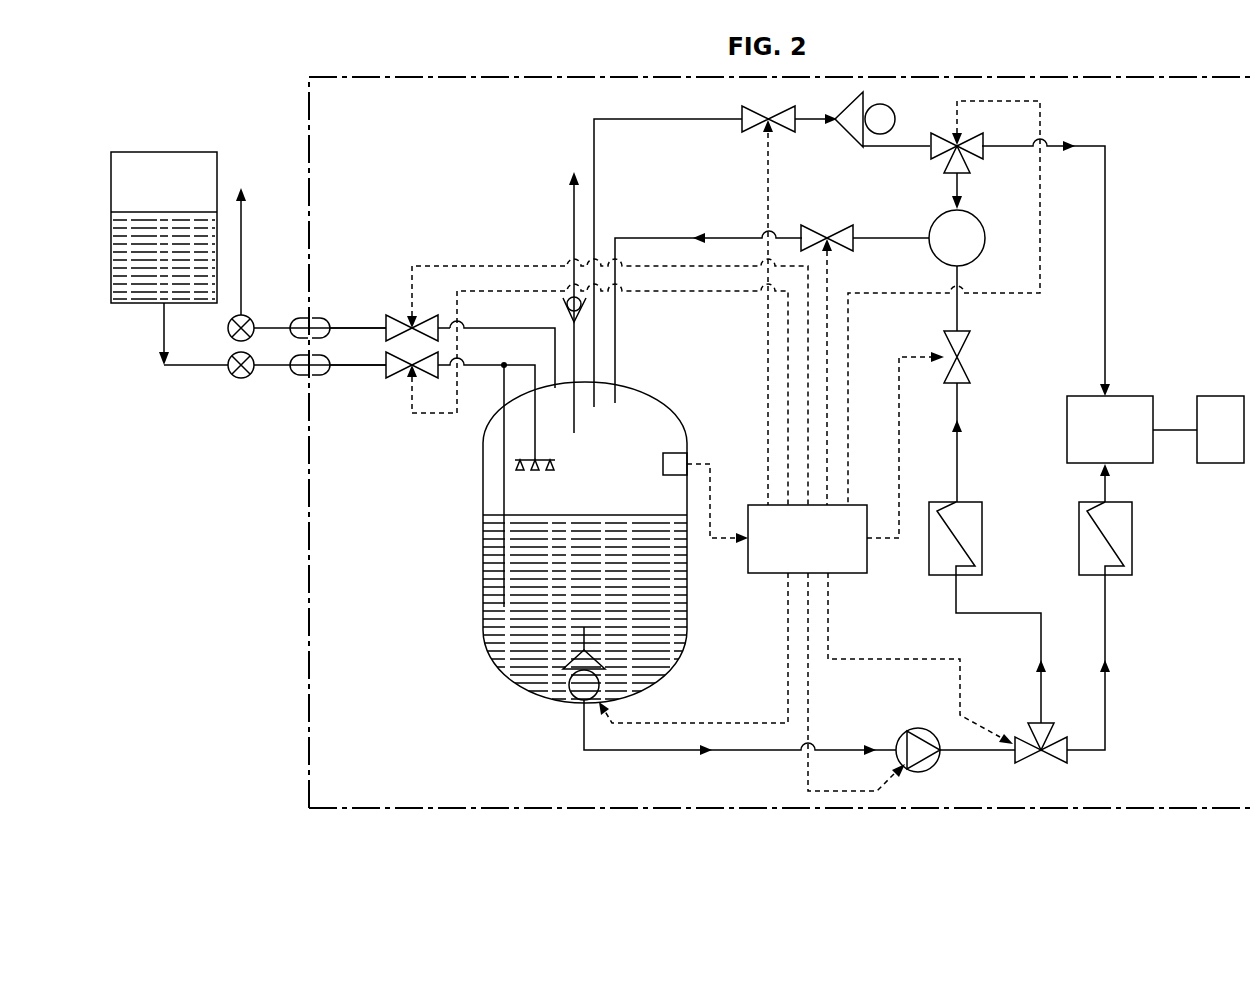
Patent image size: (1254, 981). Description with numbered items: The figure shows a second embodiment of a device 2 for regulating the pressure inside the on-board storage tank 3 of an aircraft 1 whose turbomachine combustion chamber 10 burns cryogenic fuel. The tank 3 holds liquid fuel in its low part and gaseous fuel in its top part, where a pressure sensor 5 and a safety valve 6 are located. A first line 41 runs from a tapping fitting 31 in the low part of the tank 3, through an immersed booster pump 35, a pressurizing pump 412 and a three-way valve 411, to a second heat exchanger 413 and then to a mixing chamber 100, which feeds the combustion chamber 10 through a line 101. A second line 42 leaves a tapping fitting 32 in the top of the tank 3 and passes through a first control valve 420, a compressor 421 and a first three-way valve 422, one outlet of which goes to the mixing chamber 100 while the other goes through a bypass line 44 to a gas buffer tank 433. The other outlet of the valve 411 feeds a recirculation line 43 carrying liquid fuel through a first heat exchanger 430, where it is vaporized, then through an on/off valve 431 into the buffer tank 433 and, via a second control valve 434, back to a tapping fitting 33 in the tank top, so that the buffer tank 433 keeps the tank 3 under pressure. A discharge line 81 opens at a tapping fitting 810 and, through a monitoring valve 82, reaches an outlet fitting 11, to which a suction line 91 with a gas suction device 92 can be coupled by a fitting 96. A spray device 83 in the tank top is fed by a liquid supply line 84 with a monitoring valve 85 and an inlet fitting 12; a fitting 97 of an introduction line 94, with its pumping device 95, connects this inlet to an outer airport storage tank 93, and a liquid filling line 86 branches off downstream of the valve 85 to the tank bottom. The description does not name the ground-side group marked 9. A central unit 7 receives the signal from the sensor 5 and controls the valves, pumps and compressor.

The aircraft 1 is at (309, 497).
The pressure regulating device 2 is at (466, 689).
The on-board storage tank 3 is at (483, 566).
The pressure sensor 5 is at (683, 458).
The safety valve 6 is at (562, 311).
The central unit 7 is at (807, 539).
The gas supply unit 9 is at (146, 425).
The combustion chamber 10 is at (1220, 429).
The outlet fitting 11 is at (321, 320).
The inlet fitting 12 is at (321, 376).
The tapping fitting 31 is at (582, 708).
The tapping fitting 32 is at (603, 382).
The tapping fitting 33 is at (618, 385).
The booster pump 35 is at (568, 692).
The first line 41 is at (729, 756).
The second line 42 is at (810, 122).
The recirculation line 43 is at (1041, 646).
The bypass line 44 is at (956, 194).
The discharge line 81 is at (365, 324).
The monitoring valve 82 is at (397, 318).
The spray device 83 is at (540, 458).
The liquid supply line 84 is at (365, 371).
The monitoring valve 85 is at (397, 380).
The liquid filling line 86 is at (506, 486).
The suction line 91 is at (272, 322).
The gas suction device 92 is at (228, 331).
The outer cryogenic fuel storage tank 93 is at (166, 152).
The introduction line 94 is at (186, 370).
The pumping device 95 is at (240, 380).
The fitting 96 is at (299, 320).
The fitting 97 is at (299, 376).
The mixing chamber 100 is at (1110, 449).
The line 101 is at (1172, 424).
The three-way valve 411 is at (1026, 740).
The pressurizing pump 412 is at (918, 728).
The second heat exchanger 413 is at (1132, 539).
The first control valve 420 is at (760, 130).
The compressor 421 is at (845, 106).
The first three-way valve 422 is at (945, 135).
The first heat exchanger 430 is at (982, 539).
The on/off valve 431 is at (970, 350).
The gas buffer tank 433 is at (984, 240).
The second control valve 434 is at (840, 232).
The tapping fitting 810 is at (553, 380).